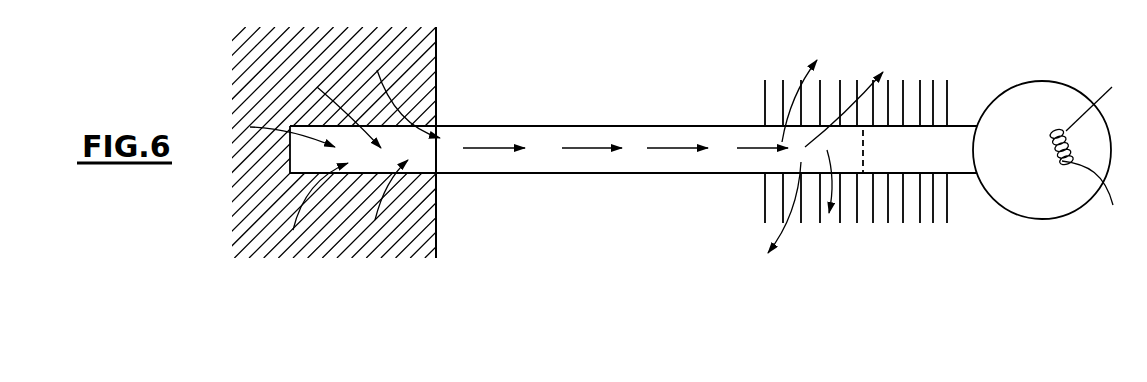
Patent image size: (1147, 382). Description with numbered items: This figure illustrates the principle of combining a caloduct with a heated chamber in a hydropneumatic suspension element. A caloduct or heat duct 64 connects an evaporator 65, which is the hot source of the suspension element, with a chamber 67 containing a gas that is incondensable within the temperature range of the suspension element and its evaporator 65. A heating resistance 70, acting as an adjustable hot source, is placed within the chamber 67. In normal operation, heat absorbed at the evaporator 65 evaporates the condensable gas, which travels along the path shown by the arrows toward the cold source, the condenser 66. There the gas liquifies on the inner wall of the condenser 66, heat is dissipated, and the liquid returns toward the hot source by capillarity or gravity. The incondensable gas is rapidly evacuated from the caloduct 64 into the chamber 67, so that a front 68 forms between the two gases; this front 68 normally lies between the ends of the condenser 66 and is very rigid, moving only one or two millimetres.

The caloduct 64 is at (547, 175).
The evaporator 65 is at (436, 229).
The condenser 66 is at (861, 226).
The chamber 67 is at (1030, 219).
The front 68 is at (866, 155).
The heating resistance 70 is at (1052, 148).